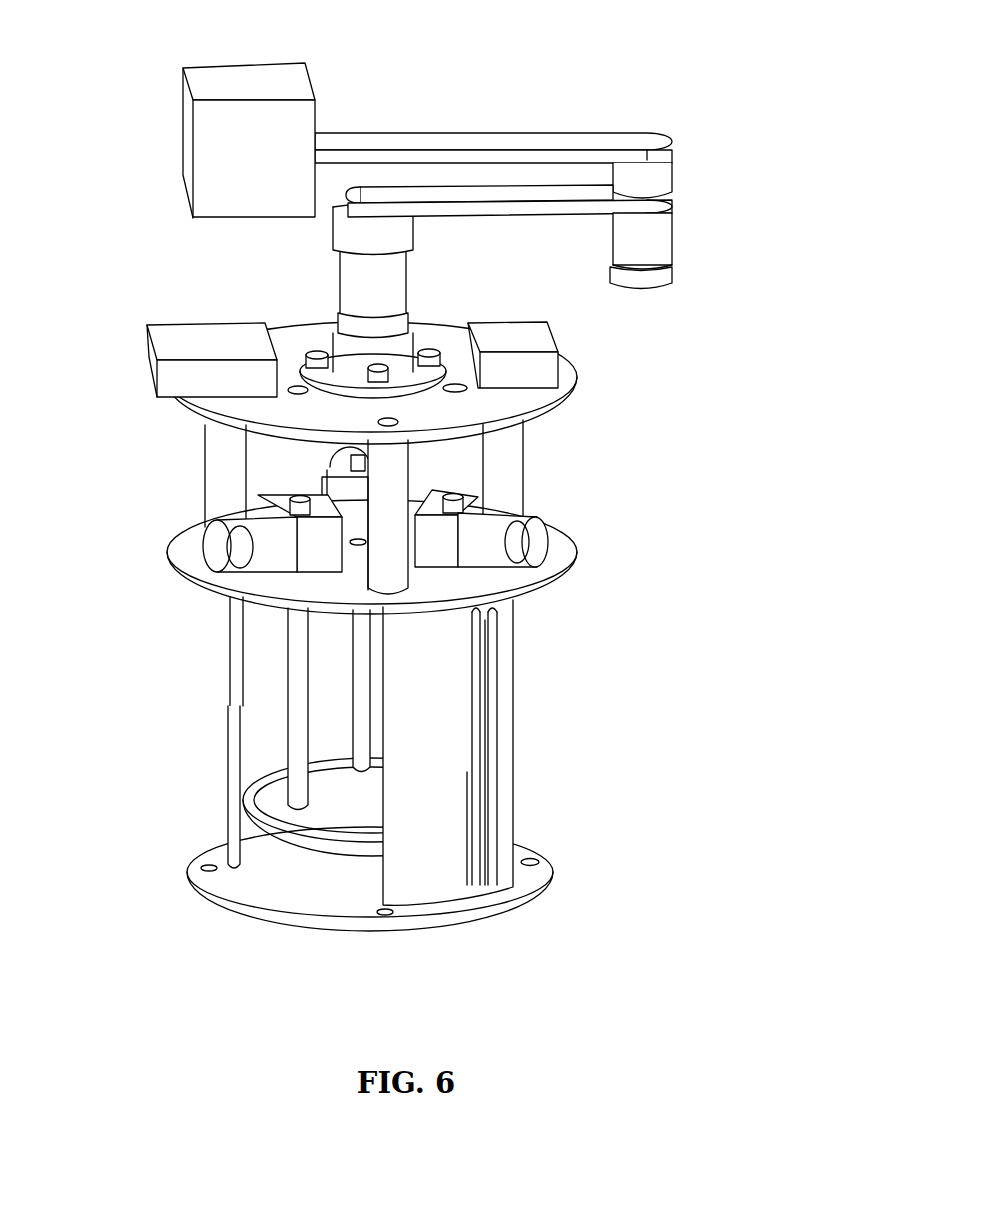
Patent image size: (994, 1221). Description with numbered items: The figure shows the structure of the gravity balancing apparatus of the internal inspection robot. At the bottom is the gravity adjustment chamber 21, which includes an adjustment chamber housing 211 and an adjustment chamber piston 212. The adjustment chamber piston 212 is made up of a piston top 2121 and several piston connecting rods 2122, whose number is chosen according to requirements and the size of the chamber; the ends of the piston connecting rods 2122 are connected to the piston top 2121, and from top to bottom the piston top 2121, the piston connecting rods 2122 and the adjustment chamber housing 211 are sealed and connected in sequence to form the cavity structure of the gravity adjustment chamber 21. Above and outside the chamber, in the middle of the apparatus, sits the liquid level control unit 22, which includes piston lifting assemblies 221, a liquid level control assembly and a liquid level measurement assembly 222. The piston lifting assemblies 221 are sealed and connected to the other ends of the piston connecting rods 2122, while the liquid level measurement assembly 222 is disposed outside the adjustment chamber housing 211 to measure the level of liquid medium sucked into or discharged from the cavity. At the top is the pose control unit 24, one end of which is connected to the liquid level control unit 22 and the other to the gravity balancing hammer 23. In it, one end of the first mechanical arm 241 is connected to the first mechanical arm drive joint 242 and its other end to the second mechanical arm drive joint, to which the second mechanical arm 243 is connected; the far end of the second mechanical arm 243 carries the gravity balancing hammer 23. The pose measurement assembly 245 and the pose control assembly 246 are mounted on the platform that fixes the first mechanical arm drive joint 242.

The gravity adjustment chamber 21 is at (412, 774).
The adjustment chamber housing 211 is at (433, 852).
The adjustment chamber piston 212 is at (297, 858).
The piston top 2121 is at (242, 812).
The piston connecting rods 2122 is at (287, 705).
The liquid level control unit of the gravity adjustment chamber 22 is at (498, 632).
The piston lifting assembly 221 is at (348, 460).
The liquid level measurement assembly 222 is at (488, 697).
The gravity balancing hammer 23 is at (250, 92).
The pose control unit 24 is at (683, 273).
The first mechanical arm 241 is at (470, 225).
The first mechanical arm drive joint 242 is at (368, 300).
The second mechanical arm 243 is at (470, 145).
The pose measurement assembly 245 is at (502, 373).
The pose control assembly 246 is at (190, 388).